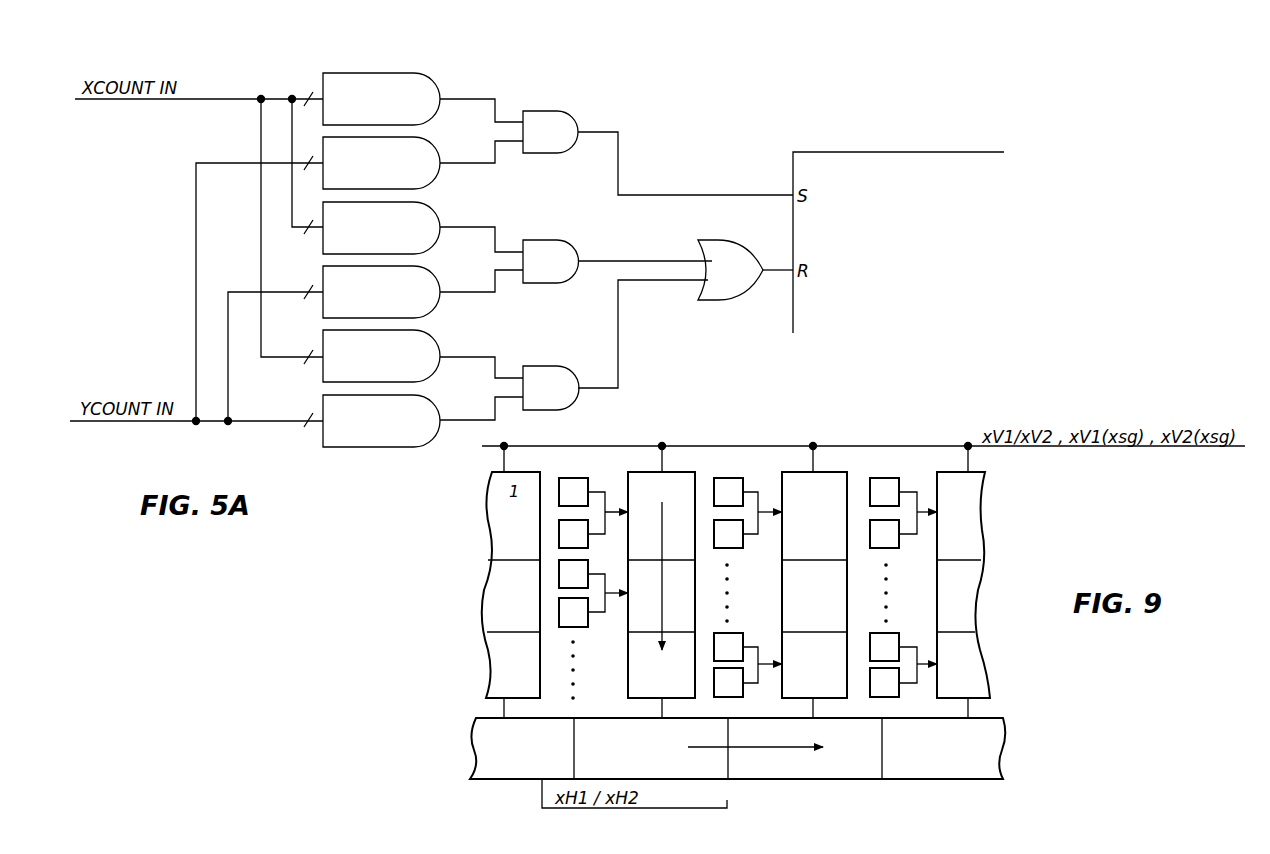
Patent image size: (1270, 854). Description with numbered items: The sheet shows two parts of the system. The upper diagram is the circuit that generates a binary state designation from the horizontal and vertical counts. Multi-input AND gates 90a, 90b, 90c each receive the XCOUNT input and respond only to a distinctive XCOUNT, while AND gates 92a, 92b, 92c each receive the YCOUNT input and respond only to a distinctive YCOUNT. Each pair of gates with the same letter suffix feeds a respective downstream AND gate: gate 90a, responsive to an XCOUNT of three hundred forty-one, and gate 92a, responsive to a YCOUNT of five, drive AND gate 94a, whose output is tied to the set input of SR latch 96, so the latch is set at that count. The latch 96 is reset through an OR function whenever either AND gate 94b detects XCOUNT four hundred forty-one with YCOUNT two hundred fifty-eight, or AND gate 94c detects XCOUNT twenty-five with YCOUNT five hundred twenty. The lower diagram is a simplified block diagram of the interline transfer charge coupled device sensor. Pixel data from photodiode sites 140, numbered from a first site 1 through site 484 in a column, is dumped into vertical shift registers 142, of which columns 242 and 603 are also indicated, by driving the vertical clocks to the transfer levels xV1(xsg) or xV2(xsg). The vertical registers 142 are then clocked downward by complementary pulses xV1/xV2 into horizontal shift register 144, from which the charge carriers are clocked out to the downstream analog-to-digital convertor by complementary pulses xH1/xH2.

In FIG. 5A, the multi-input AND gate 90a is at (432, 80).
In FIG. 5A, the multi-input AND gate 92a is at (432, 143).
In FIG. 5A, the multi-input AND gate 90b is at (432, 216).
In FIG. 5A, the multi-input AND gate 92b is at (432, 278).
In FIG. 5A, the multi-input AND gate 90c is at (432, 340).
In FIG. 5A, the multi-input AND gate 92c is at (432, 404).
In FIG. 5A, the downstream AND gate 94a is at (570, 113).
In FIG. 5A, the downstream AND gate 94b is at (570, 243).
In FIG. 5A, the downstream AND gate 94c is at (565, 367).
In FIG. 5A, the SR latch 96 is at (793, 152).
In FIG. 9, the photodiode sites 140 is at (578, 478).
In FIG. 9, the vertical shift registers 142 is at (672, 478).
In FIG. 9, the first pixel cell 1 is at (738, 478).
In FIG. 9, the pixel cell 484 is at (718, 697).
In FIG. 9, the shift register column 242 is at (814, 585).
In FIG. 9, the shift register column 603 is at (963, 585).
In FIG. 9, the horizontal shift register 144 is at (518, 780).